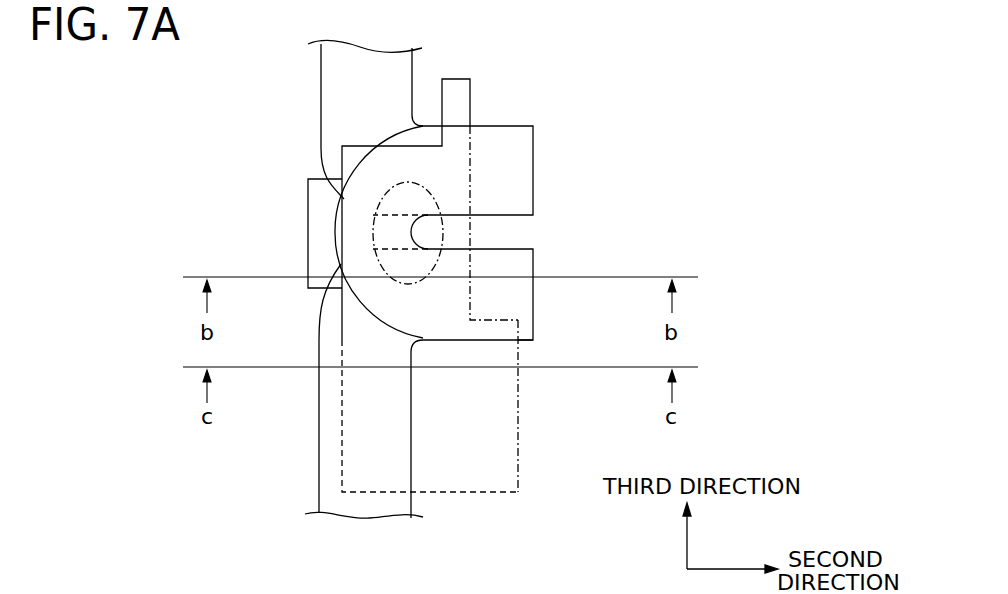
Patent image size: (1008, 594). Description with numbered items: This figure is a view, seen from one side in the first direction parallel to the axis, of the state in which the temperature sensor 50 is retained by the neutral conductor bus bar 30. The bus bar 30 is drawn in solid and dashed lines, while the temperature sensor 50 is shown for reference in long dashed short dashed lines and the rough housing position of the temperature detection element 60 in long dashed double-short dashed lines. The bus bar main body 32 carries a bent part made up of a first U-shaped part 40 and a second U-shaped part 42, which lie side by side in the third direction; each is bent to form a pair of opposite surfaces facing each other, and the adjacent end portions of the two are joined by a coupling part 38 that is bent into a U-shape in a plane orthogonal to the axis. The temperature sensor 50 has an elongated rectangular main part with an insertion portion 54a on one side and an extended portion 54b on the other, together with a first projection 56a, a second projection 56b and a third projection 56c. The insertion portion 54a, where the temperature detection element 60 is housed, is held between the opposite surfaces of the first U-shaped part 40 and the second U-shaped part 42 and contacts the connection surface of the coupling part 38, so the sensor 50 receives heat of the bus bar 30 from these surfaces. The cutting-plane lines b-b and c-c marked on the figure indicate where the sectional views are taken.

The neutral conductor bus bar 30 is at (593, 64).
The bus bar main body 32 is at (330, 409).
The coupling part 38 is at (366, 229).
The first U-shaped part 40 is at (521, 294).
The second U-shaped part 42 is at (521, 179).
The temperature sensor 50 is at (445, 507).
The insertion portion 54a is at (453, 175).
The extended portion 54b is at (430, 430).
The first projection 56a is at (458, 92).
The second projection 56b is at (512, 352).
The third projection 56c is at (318, 255).
The temperature detection element 60 is at (393, 190).